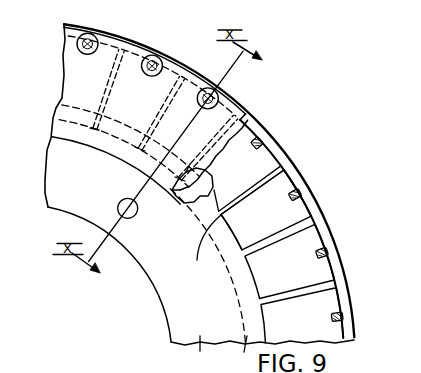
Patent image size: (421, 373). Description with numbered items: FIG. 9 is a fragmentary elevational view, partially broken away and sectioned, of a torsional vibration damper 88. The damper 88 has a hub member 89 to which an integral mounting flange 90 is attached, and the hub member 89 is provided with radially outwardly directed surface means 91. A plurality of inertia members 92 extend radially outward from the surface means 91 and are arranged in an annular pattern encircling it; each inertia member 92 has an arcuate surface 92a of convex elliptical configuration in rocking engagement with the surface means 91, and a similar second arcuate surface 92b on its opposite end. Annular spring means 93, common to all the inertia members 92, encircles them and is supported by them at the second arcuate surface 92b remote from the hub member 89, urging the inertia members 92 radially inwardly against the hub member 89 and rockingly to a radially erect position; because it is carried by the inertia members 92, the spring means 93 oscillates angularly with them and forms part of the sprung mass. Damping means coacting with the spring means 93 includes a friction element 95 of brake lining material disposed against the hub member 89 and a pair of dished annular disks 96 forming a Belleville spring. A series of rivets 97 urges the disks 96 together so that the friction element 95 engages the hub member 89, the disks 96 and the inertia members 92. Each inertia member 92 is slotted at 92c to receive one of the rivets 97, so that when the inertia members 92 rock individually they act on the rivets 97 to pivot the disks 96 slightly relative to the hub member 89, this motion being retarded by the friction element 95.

The torsional vibration damper 88 is at (189, 50).
The hub member 89 is at (208, 281).
The mounting flange 90 is at (201, 290).
The surface means 91 is at (205, 246).
The inertia members 92 is at (282, 212).
The arcuate surface 92a is at (225, 230).
The second arcuate surface 92b is at (297, 170).
The slot 92c is at (301, 200).
The annular spring means 93 is at (270, 137).
The friction element 95 is at (183, 199).
The annular disks 96 is at (112, 148).
The rivets 97 is at (304, 195).